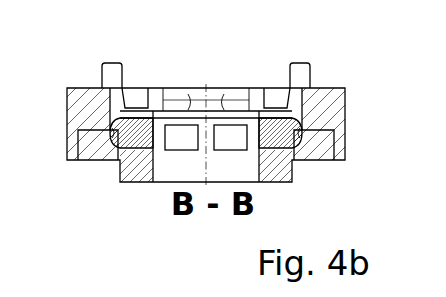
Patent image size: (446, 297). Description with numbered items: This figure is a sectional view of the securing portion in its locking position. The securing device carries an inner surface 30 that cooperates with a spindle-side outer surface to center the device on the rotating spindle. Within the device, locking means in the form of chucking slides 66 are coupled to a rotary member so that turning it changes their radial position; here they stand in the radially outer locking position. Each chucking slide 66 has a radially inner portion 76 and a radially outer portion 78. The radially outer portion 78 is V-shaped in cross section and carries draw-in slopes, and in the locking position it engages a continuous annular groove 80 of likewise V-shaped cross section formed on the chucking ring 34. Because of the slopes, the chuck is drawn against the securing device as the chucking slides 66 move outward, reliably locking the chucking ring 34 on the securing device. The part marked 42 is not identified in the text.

The inner surface 30 is at (132, 98).
The chucking ring 34 is at (322, 138).
The housing 42 is at (78, 98).
The chucking slides 66 is at (139, 146).
The radially inner portion 76 is at (228, 138).
The radially outer portion 78 is at (112, 146).
The annular groove 80 is at (113, 130).